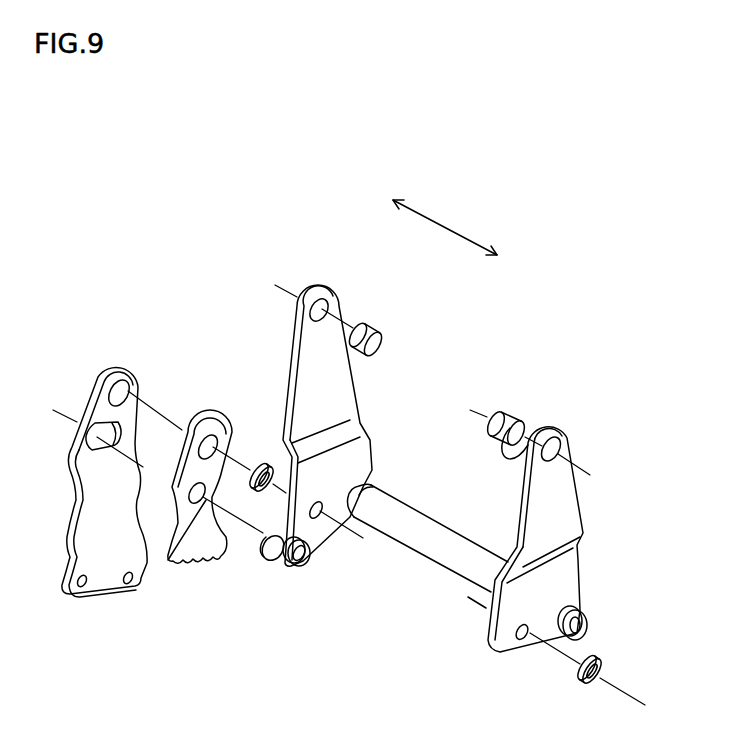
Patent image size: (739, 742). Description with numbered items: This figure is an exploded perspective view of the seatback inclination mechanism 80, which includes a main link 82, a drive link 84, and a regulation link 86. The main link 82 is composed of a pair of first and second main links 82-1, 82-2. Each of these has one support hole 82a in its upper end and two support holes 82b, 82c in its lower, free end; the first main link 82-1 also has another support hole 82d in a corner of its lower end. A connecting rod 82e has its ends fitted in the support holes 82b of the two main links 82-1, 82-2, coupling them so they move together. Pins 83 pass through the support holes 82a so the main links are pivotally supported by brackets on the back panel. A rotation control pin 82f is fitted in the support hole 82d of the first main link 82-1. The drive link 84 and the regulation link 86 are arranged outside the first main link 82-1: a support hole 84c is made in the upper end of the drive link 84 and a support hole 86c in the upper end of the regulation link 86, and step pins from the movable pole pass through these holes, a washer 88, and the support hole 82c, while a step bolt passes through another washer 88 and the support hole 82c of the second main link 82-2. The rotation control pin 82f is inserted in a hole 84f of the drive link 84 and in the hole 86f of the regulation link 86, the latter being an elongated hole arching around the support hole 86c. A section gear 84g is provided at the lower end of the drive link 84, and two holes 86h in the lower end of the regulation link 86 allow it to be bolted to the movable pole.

The inclination mechanism 80 is at (244, 206).
The main link 82 is at (512, 323).
The first main link 82-1 is at (340, 372).
The second main link 82-2 is at (503, 410).
The support hole 82a is at (331, 304).
The support hole 82b is at (378, 490).
The support hole 82c is at (318, 515).
The support hole 82d is at (298, 568).
The connecting rod 82e is at (447, 553).
The rotation control pin 82f is at (265, 543).
The pin 83 is at (374, 331).
The drive link 84 is at (192, 470).
The support hole 84c is at (222, 437).
The hole 84f is at (177, 542).
The section gear 84g is at (193, 570).
The regulation link 86 is at (90, 493).
The support hole 86c is at (130, 390).
The hole 86f is at (97, 422).
The holes 86h is at (128, 584).
The washer 88 is at (265, 462).